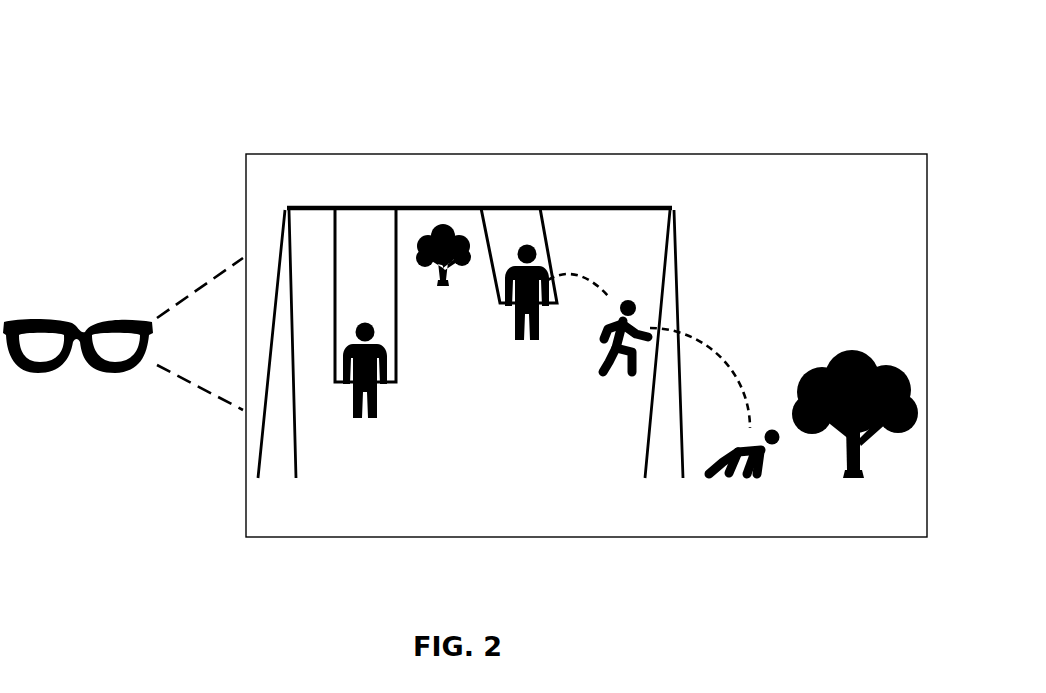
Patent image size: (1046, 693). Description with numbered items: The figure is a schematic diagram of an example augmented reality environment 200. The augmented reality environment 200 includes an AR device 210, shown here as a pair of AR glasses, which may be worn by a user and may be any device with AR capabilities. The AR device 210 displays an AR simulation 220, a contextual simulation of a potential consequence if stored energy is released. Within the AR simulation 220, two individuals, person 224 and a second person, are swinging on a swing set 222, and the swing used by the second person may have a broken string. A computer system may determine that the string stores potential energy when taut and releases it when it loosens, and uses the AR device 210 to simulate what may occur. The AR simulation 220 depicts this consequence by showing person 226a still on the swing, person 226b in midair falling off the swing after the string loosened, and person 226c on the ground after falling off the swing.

The augmented reality environment 200 is at (99, 84).
The AR device 210 is at (48, 318).
The AR simulation 220 is at (780, 154).
The swing set 222 is at (673, 232).
The person 224 is at (377, 403).
The person still on the swing 226a is at (533, 342).
The person in midair falling off the swing 226b is at (604, 373).
The person on the ground after falling off the swing 226c is at (765, 470).